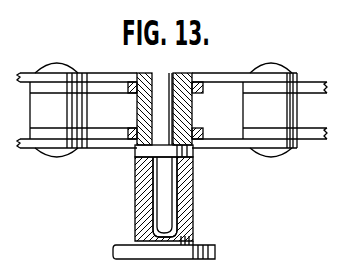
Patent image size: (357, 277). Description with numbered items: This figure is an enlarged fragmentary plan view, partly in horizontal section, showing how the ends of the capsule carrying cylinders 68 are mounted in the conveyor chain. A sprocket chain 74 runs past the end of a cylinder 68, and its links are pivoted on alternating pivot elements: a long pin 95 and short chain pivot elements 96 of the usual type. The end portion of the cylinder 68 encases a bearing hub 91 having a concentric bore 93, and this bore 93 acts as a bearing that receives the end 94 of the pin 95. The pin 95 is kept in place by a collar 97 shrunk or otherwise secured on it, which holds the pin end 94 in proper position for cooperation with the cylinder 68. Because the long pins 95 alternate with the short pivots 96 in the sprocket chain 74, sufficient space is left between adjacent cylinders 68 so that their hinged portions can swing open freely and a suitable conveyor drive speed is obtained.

The capsule carrying cylinder 68 is at (267, 240).
The sprocket chain 74 is at (300, 78).
The bearing hub 91 is at (195, 207).
The concentric bore 93 is at (162, 206).
The pin end 94 is at (163, 183).
The pin 95 is at (207, 75).
The chain pivot element 96 is at (53, 63).
The collar 97 is at (193, 156).